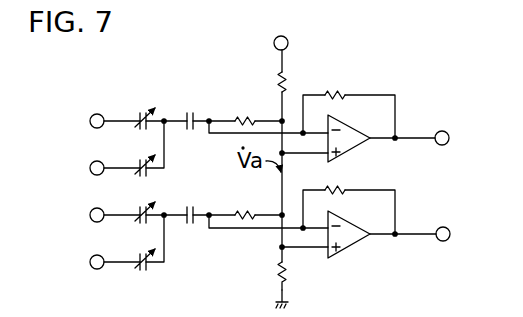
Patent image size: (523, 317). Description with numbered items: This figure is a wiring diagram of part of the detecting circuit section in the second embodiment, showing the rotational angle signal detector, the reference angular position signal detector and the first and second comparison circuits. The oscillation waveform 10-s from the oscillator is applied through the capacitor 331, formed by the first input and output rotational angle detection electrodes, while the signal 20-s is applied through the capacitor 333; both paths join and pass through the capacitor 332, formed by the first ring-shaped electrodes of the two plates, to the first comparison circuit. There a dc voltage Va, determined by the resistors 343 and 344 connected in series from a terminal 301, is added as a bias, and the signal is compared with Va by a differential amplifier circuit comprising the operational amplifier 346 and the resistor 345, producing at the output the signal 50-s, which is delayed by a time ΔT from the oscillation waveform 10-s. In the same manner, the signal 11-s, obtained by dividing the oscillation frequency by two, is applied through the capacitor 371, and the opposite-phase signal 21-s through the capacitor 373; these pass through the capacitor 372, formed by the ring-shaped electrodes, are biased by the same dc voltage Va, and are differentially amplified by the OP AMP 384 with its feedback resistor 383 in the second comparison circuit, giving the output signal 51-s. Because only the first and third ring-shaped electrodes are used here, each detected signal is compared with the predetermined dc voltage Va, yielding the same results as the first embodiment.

The oscillation waveform 10-s is at (90, 115).
The signal 20-s is at (90, 162).
The signal 11-s is at (90, 209).
The signal 21-s is at (90, 256).
The signal 50-s is at (456, 114).
The second output terminal 51-s is at (441, 226).
The supply voltage terminal 301 is at (287, 41).
The capacitor 331 is at (143, 111).
The capacitor 332 is at (190, 111).
The capacitor 333 is at (141, 159).
The capacitor 371 is at (150, 206).
The capacitor 372 is at (190, 224).
The capacitor 373 is at (145, 272).
The resistor 343 is at (286, 76).
The resistor 344 is at (287, 272).
The resistor 345 is at (337, 92).
The operational amplifier 346 is at (357, 150).
The feedback resistor 383 is at (340, 193).
The OP AMP 384 is at (355, 252).